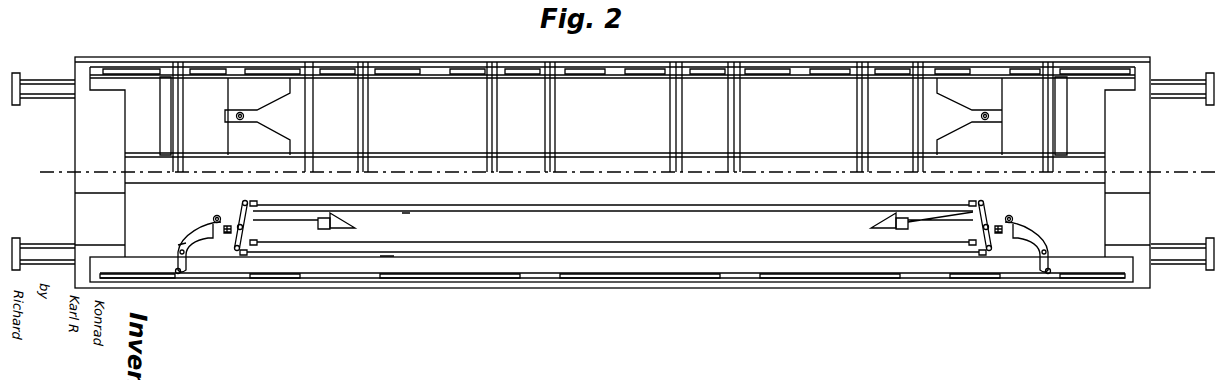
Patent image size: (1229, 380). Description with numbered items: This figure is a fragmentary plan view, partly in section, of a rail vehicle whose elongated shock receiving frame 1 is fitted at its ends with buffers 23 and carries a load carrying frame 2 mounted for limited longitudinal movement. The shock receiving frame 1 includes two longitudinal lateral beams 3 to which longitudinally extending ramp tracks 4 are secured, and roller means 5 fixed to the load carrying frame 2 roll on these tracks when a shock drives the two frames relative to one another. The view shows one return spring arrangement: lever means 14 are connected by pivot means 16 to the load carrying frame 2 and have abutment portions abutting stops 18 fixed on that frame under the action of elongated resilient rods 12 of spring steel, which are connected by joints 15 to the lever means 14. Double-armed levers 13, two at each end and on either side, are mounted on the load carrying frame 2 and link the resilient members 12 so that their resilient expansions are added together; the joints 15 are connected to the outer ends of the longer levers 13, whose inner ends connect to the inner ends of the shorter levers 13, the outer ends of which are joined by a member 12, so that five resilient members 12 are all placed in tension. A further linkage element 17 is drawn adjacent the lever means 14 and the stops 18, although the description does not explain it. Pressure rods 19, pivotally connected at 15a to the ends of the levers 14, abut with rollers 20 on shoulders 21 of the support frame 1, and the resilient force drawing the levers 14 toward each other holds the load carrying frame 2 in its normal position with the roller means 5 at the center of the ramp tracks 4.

The shock receiving frame 1 is at (103, 200).
The load carrying frame 2 is at (705, 100).
The longitudinal lateral beam 3 is at (287, 62).
The ramp track 4 is at (465, 70).
The roller means 5 is at (172, 68).
The elongated resilient rod 12 is at (410, 213).
The double-armed lever 13 is at (246, 255).
The lever means 14 is at (200, 226).
The joint 15 is at (177, 252).
The pivotal connection 15a is at (193, 250).
The pivot means 16 is at (178, 274).
The lever 17 is at (239, 229).
The stop 18 is at (228, 225).
The pressure rod 19 is at (283, 207).
The roller 20 is at (325, 232).
The shoulder 21 is at (340, 222).
The buffer 23 is at (1197, 88).